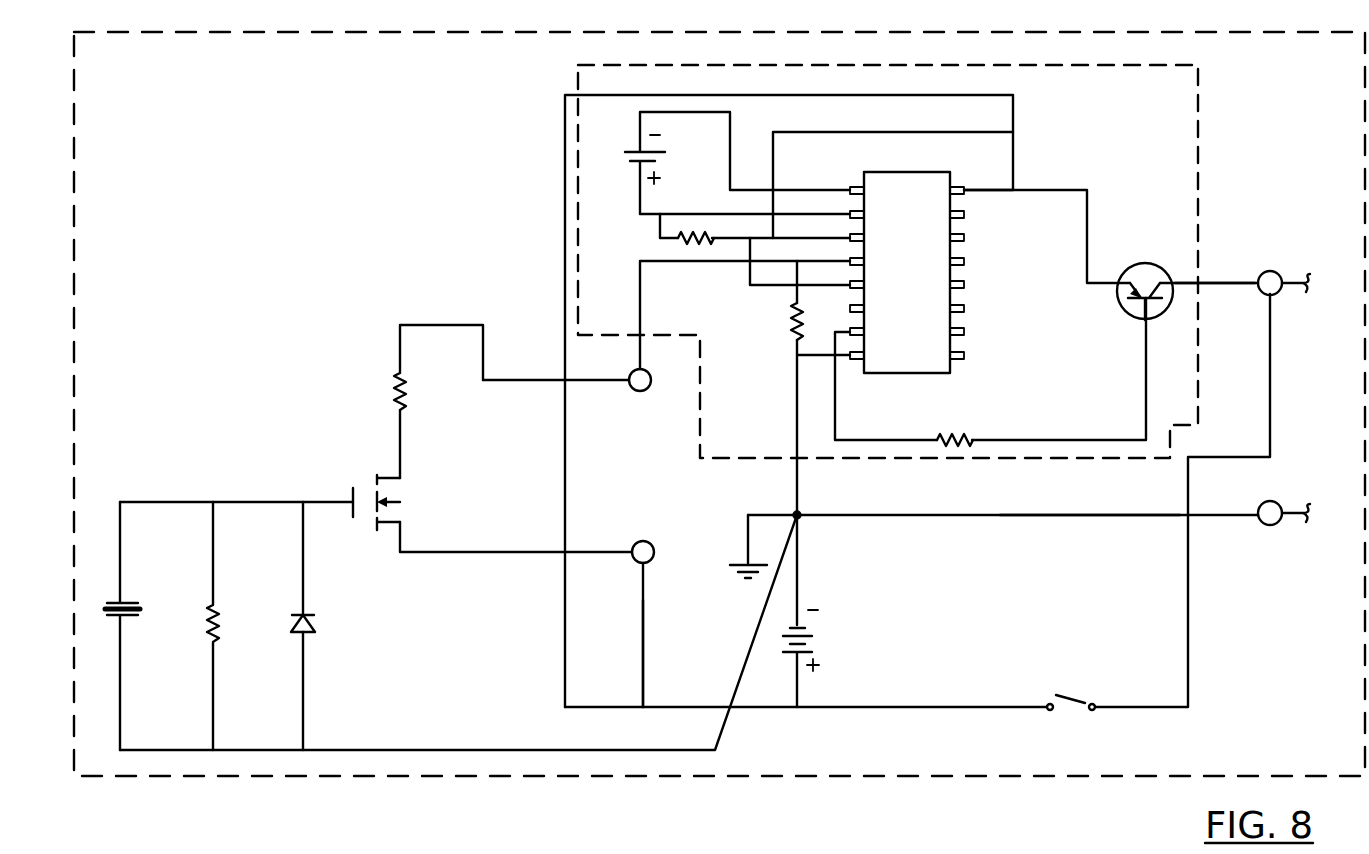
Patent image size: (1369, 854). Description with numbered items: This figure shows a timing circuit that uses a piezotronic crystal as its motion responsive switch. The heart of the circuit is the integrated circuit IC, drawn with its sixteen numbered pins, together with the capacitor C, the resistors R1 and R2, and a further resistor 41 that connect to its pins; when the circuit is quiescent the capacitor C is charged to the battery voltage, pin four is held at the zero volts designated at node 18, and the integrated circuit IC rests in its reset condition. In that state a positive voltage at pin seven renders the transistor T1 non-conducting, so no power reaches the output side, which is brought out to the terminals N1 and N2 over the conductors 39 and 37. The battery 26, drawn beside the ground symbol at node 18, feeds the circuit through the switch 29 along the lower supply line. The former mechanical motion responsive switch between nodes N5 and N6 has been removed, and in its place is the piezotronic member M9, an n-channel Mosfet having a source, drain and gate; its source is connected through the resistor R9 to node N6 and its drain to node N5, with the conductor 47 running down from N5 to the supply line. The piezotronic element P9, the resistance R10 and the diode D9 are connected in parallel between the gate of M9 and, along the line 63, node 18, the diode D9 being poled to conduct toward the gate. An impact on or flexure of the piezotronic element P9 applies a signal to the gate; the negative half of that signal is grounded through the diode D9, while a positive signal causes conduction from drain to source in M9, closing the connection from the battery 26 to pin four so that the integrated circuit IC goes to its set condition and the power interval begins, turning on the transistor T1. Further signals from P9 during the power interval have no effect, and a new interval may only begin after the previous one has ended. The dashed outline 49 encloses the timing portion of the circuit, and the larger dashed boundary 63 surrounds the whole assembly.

The line 63 is at (540, 752).
The timer circuit module 49 is at (640, 312).
The node 18 is at (800, 512).
The integrated circuit IC is at (966, 270).
The capacitor C is at (622, 152).
The resistor R1 is at (698, 250).
The resistor R2 is at (790, 325).
The resistor 41 is at (950, 445).
The transistor T1 is at (1163, 266).
The node N1 terminal N1 is at (1275, 269).
The output conductor 39 is at (1233, 285).
The node N2 terminal N2 is at (1275, 500).
The ground conductor 37 is at (1108, 516).
The switch 29 is at (1073, 697).
The battery 26 is at (812, 645).
The node N5 is at (636, 561).
The conductor 47 is at (645, 628).
The node N6 is at (636, 371).
The resistor R9 is at (400, 395).
The piezotronic member M9 is at (400, 502).
The piezotronic element P9 is at (128, 616).
The resistance R10 is at (225, 626).
The diode D9 is at (318, 628).